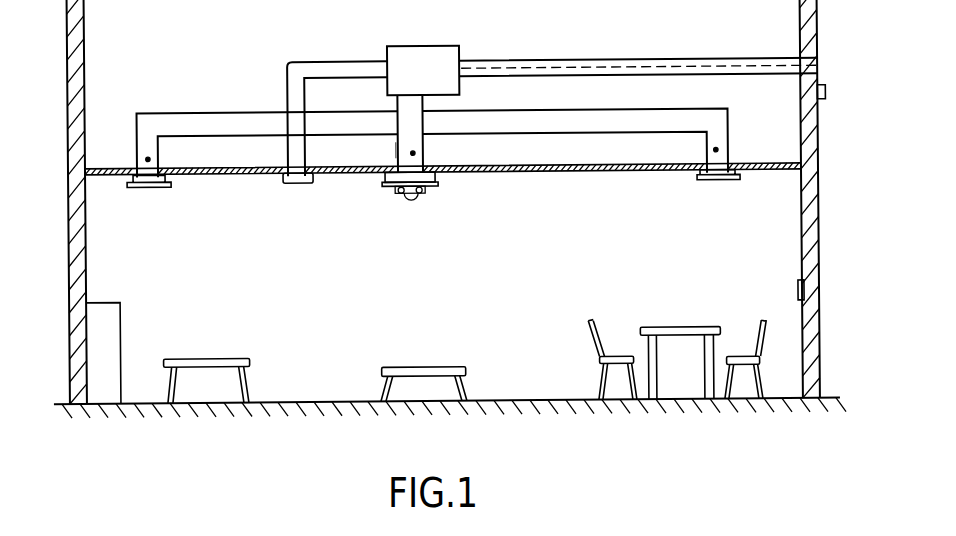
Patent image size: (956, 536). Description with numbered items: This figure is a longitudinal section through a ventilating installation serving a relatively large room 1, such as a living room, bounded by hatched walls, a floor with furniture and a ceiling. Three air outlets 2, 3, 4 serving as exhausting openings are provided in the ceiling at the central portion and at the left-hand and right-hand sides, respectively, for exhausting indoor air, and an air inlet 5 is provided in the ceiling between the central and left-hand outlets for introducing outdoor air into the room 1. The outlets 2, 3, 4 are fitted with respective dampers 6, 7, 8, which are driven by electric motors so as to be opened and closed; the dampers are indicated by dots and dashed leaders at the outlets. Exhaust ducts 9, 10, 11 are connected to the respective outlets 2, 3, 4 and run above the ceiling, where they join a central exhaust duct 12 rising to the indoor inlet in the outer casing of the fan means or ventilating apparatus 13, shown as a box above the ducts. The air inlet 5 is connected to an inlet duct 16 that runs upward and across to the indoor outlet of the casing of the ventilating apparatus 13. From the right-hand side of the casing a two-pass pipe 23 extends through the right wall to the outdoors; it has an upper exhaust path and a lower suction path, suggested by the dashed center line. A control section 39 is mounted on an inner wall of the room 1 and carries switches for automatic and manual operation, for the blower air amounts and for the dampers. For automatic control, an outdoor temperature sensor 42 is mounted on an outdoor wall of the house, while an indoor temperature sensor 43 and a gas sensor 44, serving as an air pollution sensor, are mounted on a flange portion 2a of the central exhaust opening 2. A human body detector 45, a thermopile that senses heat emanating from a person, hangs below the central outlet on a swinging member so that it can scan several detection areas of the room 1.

The room 1 is at (105, 262).
The air outlet 2 is at (442, 212).
The flange portion 2a is at (438, 184).
The air outlet 3 is at (160, 187).
The air outlet 4 is at (718, 183).
The air inlet 5 is at (297, 183).
The damper 6 is at (416, 152).
The damper 7 is at (150, 155).
The damper 8 is at (718, 150).
The exhaust duct 9 is at (398, 148).
The exhaust duct 10 is at (165, 111).
The exhaust duct 11 is at (652, 111).
The central exhaust duct 12 is at (398, 97).
The ventilating apparatus 13 is at (452, 46).
The inlet duct 16 is at (302, 61).
The two-pass pipe 23 is at (698, 61).
The control section 39 is at (797, 293).
The outdoor temperature sensor 42 is at (826, 95).
The indoor temperature sensor 43 is at (425, 192).
The gas sensor 44 is at (397, 194).
The human body detector 45 is at (411, 200).